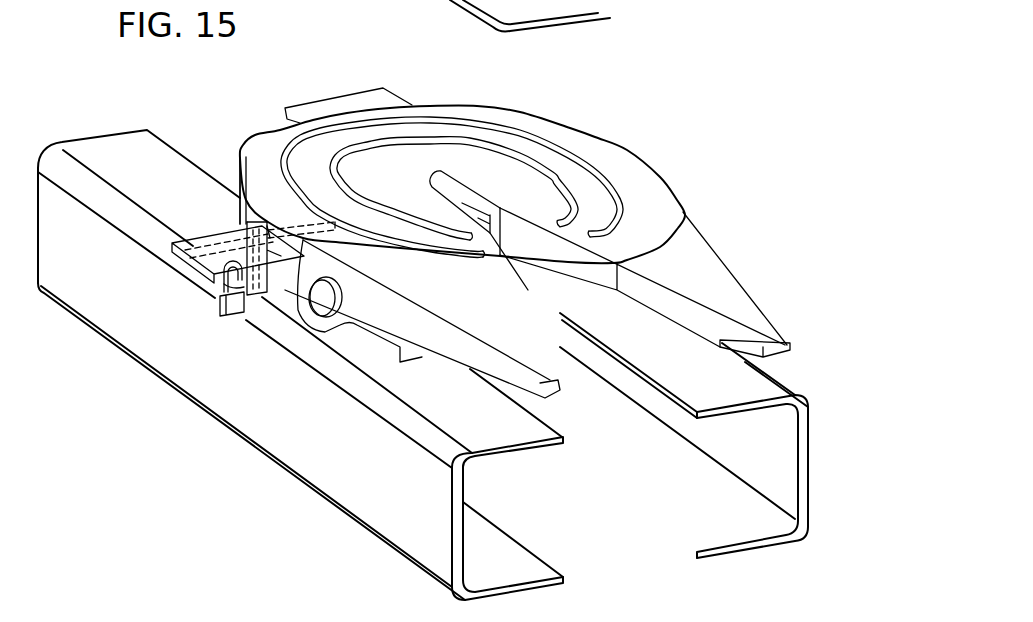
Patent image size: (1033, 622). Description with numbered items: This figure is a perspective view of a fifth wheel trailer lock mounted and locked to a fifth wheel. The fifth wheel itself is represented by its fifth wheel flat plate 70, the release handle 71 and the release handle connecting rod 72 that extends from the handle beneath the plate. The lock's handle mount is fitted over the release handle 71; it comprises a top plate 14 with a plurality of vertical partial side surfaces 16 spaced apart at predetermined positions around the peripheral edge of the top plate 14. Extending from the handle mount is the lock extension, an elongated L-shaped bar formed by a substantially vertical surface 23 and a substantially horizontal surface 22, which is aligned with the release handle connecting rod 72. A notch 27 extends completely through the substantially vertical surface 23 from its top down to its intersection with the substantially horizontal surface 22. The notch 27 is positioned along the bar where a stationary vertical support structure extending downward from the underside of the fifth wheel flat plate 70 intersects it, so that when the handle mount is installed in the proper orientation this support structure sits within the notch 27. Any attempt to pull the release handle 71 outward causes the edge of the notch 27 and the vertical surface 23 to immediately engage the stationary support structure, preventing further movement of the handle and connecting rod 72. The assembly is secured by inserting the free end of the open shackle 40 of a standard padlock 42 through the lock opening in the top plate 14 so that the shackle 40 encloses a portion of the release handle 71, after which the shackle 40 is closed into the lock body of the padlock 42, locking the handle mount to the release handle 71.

The top plate 14 is at (196, 243).
The vertical partial side surfaces 16 is at (177, 256).
The substantially horizontal surface 22 is at (298, 250).
The substantially vertical surface 23 is at (277, 230).
The notch 27 is at (257, 243).
The shackle 40 is at (220, 292).
The padlock 42 is at (220, 314).
The fifth wheel flat plate 70 is at (588, 147).
The release handle 71 is at (213, 240).
The release handle connecting rod 72 is at (325, 228).